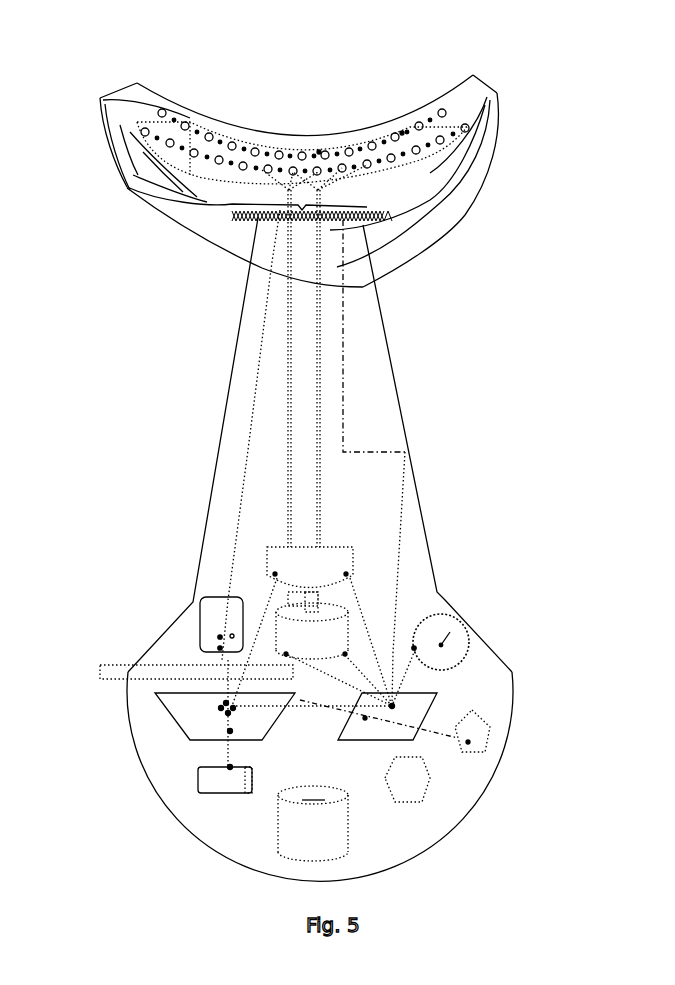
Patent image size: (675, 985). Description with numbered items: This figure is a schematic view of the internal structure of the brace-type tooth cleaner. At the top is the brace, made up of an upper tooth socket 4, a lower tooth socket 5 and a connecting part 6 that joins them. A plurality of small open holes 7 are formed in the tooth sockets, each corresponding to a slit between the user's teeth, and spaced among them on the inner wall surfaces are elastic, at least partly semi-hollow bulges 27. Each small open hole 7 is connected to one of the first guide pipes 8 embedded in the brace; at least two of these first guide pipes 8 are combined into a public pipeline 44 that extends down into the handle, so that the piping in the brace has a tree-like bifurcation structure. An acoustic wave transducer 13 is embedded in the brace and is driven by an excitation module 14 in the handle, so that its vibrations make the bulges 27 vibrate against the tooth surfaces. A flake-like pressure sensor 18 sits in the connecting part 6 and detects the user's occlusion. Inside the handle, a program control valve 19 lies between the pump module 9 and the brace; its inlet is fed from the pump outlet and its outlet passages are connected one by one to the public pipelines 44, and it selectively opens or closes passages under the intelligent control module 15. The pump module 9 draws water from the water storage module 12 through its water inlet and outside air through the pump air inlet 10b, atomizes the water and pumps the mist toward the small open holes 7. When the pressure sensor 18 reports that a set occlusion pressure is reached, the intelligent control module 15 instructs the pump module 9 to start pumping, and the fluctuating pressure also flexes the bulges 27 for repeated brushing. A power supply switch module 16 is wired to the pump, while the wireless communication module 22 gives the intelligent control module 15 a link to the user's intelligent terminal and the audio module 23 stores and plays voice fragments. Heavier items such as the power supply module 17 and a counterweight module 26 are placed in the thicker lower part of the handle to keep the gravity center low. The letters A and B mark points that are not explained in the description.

The upper tooth socket 4 is at (118, 98).
The lower tooth socket 5 is at (233, 237).
The connecting part 6 is at (157, 208).
The small open holes 7 is at (440, 110).
The first guide pipes 8 is at (320, 177).
The pump module 9 is at (334, 654).
The pump air inlet 10b is at (115, 673).
The water storage module 12 is at (302, 820).
The acoustic wave transducer 13 is at (205, 185).
The excitation module 14 is at (200, 632).
The intelligent control module 15 is at (430, 707).
The power supply switch module 16 is at (230, 732).
The power supply module 17 is at (200, 775).
The pressure sensor 18 is at (367, 207).
The program control valve 19 is at (312, 626).
The wireless communication module 22 is at (473, 657).
The audio module 23 is at (490, 730).
The counterweight module 26 is at (430, 778).
The bulges 27 is at (402, 133).
The public pipeline 44 is at (363, 260).
The point A is at (190, 740).
The point B is at (228, 706).